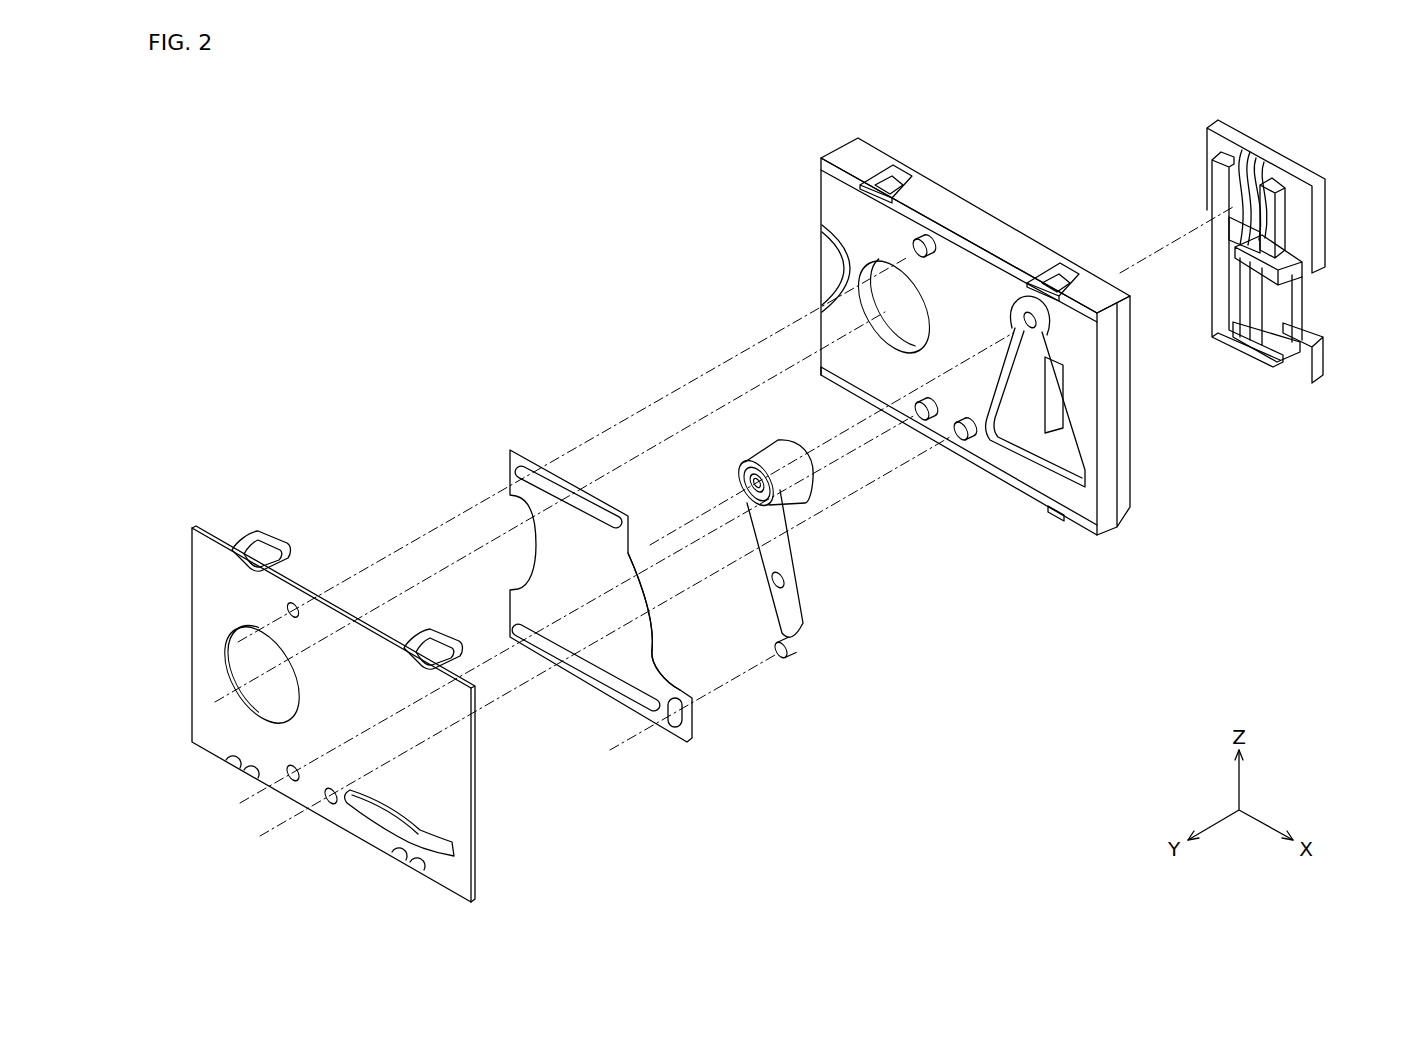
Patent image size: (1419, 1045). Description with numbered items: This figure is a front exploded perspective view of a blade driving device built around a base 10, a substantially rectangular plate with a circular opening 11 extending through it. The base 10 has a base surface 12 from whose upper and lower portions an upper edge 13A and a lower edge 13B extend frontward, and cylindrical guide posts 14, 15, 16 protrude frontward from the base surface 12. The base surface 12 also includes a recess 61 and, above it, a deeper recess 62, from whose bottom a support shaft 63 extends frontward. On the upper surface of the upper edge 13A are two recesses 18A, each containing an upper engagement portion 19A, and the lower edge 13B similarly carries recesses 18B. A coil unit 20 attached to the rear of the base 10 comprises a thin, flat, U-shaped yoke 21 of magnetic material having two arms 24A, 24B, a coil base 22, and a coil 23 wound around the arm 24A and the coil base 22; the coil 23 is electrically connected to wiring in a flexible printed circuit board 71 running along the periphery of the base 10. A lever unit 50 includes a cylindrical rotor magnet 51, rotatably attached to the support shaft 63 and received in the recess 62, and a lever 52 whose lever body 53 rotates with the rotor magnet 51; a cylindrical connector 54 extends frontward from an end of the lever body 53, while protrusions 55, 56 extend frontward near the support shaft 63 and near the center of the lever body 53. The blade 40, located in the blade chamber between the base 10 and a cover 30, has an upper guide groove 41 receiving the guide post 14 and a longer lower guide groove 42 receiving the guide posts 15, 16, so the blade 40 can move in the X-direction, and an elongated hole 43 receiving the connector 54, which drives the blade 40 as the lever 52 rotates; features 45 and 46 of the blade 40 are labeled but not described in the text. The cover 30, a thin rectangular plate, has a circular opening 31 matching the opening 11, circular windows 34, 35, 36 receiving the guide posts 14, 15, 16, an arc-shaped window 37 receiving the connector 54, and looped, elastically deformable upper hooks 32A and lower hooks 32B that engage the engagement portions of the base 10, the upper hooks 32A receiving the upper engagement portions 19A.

The base 10 is at (961, 328).
The circular opening 11 is at (893, 310).
The base surface 12 is at (975, 288).
The upper edge 13A is at (940, 227).
The lower edge 13B is at (950, 448).
The guide post 14 is at (912, 247).
The guide post 15 is at (965, 442).
The guide post 16 is at (917, 420).
The recess 18A is at (908, 180).
The recess 18B is at (859, 405).
The upper engagement portion 19A is at (888, 185).
The coil unit 20 is at (1265, 299).
The yoke 21 is at (1216, 281).
The coil base 22 is at (1318, 209).
The coil 23 is at (1282, 308).
The arm 24A is at (1272, 232).
The arm 24B is at (1222, 228).
The cover 30 is at (324, 694).
The circular opening 31 is at (243, 662).
The upper hook 32A is at (236, 520).
The lower hook 32B is at (241, 788).
The circular window 34 is at (294, 604).
The circular window 35 is at (330, 803).
The circular window 36 is at (291, 780).
The arc-shaped window 37 is at (384, 826).
The blade 40 is at (600, 642).
The guide groove 41 is at (525, 470).
The guide groove 42 is at (587, 675).
The elongated hole 43 is at (682, 716).
The cutout 45 is at (630, 552).
The recess 46 is at (657, 660).
The lever unit 50 is at (764, 554).
The rotor magnet 51 is at (780, 455).
The lever 52 is at (746, 542).
The lever body 53 is at (790, 562).
The connector 54 is at (793, 655).
The protrusion 55 is at (753, 478).
The protrusion 56 is at (772, 586).
The recess 61 is at (1038, 450).
The recess 62 is at (1012, 313).
The support shaft 63 is at (1040, 323).
The flexible printed circuit board 71 is at (1125, 400).